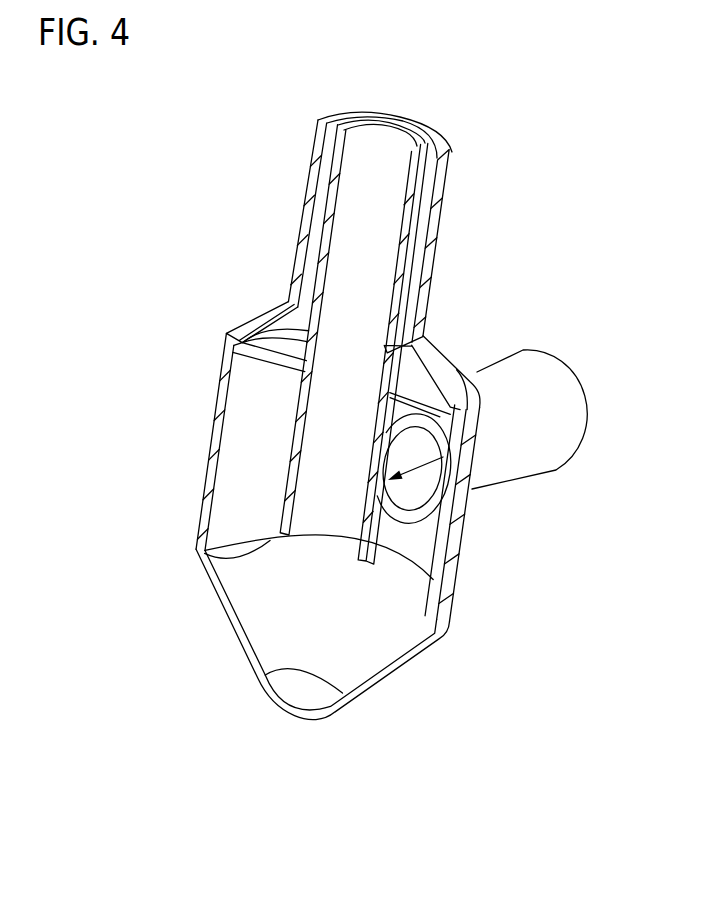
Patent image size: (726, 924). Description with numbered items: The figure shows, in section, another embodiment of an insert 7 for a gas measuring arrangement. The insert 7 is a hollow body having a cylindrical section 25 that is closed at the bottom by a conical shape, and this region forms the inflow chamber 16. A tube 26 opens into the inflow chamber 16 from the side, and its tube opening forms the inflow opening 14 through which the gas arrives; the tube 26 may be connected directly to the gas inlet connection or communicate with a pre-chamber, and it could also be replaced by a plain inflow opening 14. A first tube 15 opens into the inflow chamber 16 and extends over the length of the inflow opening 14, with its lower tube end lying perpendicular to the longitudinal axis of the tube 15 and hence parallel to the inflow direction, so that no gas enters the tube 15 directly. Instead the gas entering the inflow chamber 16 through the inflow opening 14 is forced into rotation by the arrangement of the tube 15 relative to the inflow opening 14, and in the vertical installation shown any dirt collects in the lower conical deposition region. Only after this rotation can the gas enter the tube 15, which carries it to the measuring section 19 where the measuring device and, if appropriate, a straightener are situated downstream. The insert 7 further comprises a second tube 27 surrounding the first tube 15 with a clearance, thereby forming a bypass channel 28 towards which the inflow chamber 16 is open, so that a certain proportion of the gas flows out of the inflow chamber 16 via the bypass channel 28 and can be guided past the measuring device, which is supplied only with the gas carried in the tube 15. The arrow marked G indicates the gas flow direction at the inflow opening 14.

The insert 7 is at (462, 343).
The inflow opening 14 is at (420, 483).
The tube 15 is at (300, 409).
The inflow chamber 16 is at (400, 548).
The measuring section 19 is at (242, 569).
The cylindrical section 25 is at (438, 552).
The tube 26 is at (515, 437).
The second tube 27 is at (428, 240).
The bypass channel 28 is at (320, 207).
The gap G is at (467, 506).